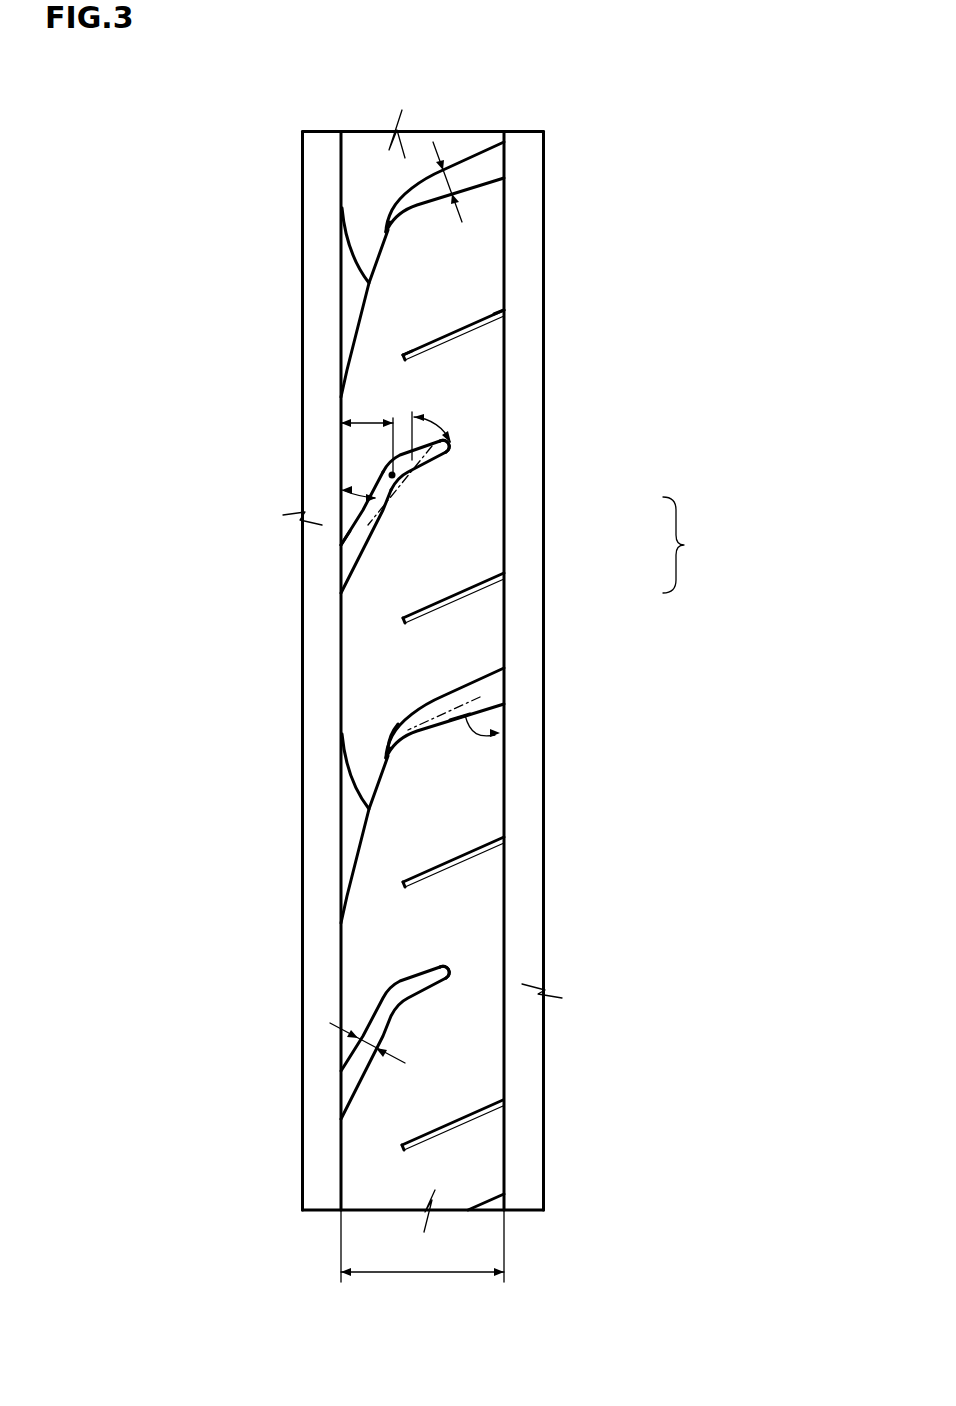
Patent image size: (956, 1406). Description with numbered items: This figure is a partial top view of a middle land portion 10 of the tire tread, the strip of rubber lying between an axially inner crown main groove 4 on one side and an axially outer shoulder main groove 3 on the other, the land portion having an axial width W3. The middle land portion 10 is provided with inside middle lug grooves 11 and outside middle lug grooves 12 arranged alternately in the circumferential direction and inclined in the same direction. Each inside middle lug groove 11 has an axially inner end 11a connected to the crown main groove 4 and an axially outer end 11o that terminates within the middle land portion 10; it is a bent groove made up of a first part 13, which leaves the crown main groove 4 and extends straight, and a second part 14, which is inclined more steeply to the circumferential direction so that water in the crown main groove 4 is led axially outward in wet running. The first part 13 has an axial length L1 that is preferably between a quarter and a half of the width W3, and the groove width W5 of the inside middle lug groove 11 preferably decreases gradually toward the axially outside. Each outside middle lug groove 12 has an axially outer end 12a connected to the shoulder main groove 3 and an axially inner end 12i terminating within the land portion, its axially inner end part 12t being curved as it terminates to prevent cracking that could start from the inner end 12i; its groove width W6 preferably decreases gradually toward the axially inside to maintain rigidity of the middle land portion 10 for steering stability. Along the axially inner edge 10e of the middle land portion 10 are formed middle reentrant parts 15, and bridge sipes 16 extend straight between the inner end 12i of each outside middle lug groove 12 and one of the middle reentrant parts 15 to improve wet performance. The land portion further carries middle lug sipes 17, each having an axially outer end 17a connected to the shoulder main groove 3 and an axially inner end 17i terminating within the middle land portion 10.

The shoulder main groove 3 is at (523, 152).
The crown main groove 4 is at (322, 158).
The middle land portion 10 is at (406, 160).
The axially inner edge of the middle land portion 10e is at (341, 645).
The inside middle lug groove 11 is at (213, 1020).
The axially inner end of the inside middle lug groove 11a is at (341, 545).
The axially outer end of the inside middle lug groove 11o is at (450, 446).
The outside middle lug groove 12 is at (417, 205).
The axially outer end of the outside middle lug groove 12a is at (460, 706).
The axially inner end of the outside middle lug groove 12i is at (385, 232).
The axially inner end part of the outside middle lug groove 12t is at (388, 728).
The first part 13 is at (373, 528).
The second part 14 is at (413, 468).
The middle reentrant part 15 is at (352, 297).
The bridge sipe 16 is at (342, 222).
The middle lug sipe 17 is at (447, 338).
The axially outer end of the middle lug sipe 17a is at (504, 310).
The axially inner end of the middle lug sipe 17i is at (403, 355).
The axial length of the first part L1 is at (365, 423).
The axial width of the middle land portion W3 is at (422, 1289).
The groove width of the inside middle lug groove W5 is at (363, 1040).
The groove width of the outside middle lug groove W6 is at (450, 183).